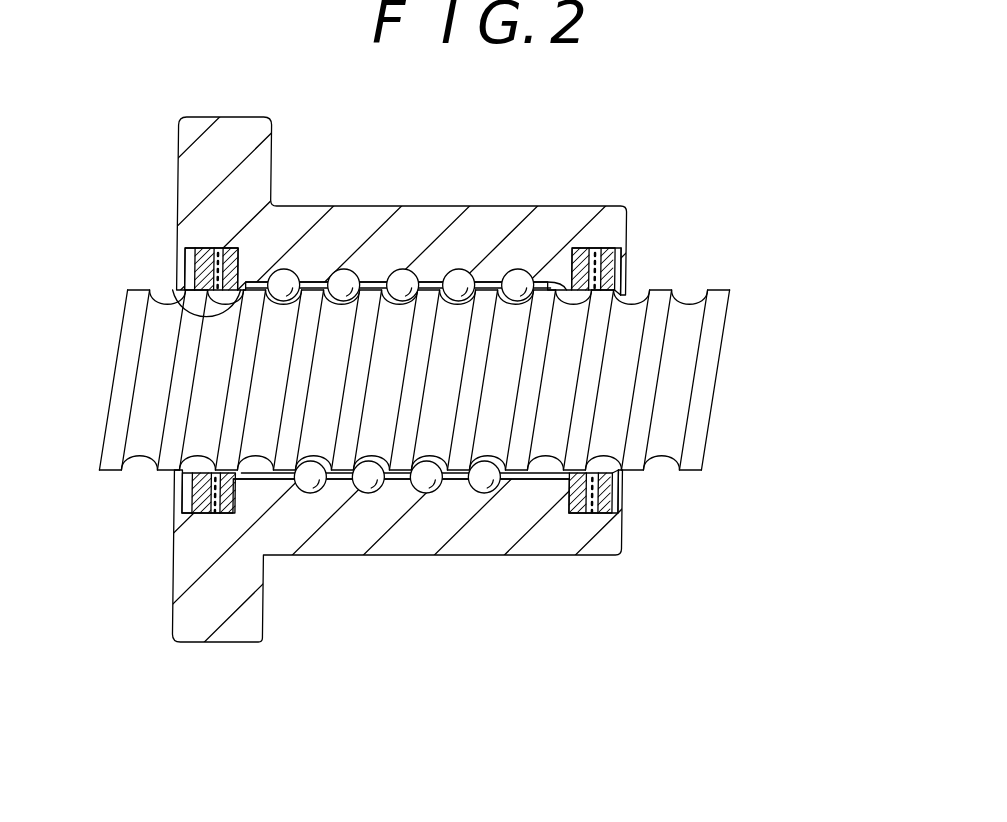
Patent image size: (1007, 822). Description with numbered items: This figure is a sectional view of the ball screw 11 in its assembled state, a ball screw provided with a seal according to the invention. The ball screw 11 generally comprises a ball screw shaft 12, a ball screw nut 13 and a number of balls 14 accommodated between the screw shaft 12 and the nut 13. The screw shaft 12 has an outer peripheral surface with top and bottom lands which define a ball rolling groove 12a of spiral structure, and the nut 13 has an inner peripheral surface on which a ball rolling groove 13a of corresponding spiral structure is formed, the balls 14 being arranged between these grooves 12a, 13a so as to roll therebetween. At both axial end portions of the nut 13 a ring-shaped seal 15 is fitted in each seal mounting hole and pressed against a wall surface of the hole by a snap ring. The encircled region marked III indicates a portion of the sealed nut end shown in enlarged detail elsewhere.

The ball screw 11 is at (414, 378).
The ball screw shaft 12 is at (445, 351).
The ball rolling groove 12a is at (692, 300).
The ball screw nut 13 is at (545, 215).
The ball rolling groove 13a is at (532, 277).
The balls 14 is at (462, 278).
The seal 15 is at (193, 245).
The enlarged section III is at (248, 278).